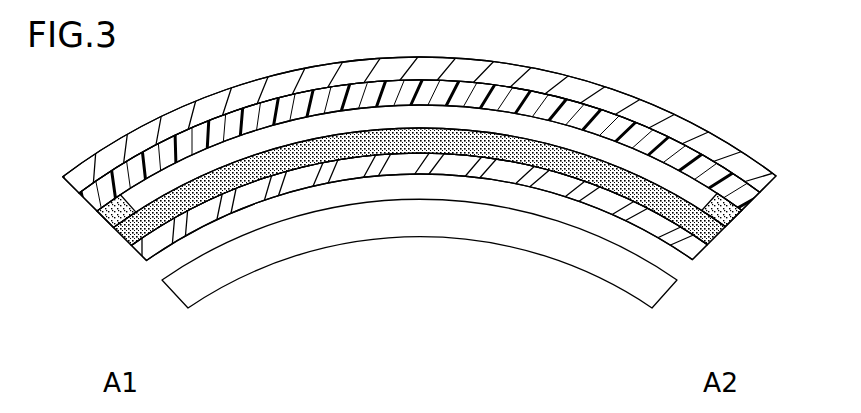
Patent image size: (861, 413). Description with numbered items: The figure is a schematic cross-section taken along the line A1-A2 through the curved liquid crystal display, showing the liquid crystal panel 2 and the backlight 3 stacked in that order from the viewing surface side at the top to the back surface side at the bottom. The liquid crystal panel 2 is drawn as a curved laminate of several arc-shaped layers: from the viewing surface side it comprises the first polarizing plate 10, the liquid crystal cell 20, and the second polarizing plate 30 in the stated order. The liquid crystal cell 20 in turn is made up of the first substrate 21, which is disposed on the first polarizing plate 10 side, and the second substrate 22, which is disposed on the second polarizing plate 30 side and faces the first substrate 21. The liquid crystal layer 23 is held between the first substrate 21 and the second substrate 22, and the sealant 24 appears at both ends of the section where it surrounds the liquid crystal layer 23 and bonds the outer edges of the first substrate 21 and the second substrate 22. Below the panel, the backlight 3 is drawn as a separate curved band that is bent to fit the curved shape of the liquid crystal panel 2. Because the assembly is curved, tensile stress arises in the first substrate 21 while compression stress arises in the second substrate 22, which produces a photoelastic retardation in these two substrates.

The liquid crystal panel 2 is at (826, 225).
The first polarizing plate 10 is at (774, 179).
The liquid crystal cell 20 is at (763, 197).
The first substrate 21 is at (85, 199).
The second substrate 22 is at (157, 223).
The liquid crystal layer 23 is at (140, 193).
The sealant 24 is at (107, 218).
The second polarizing plate 30 is at (700, 252).
The backlight 3 is at (563, 250).